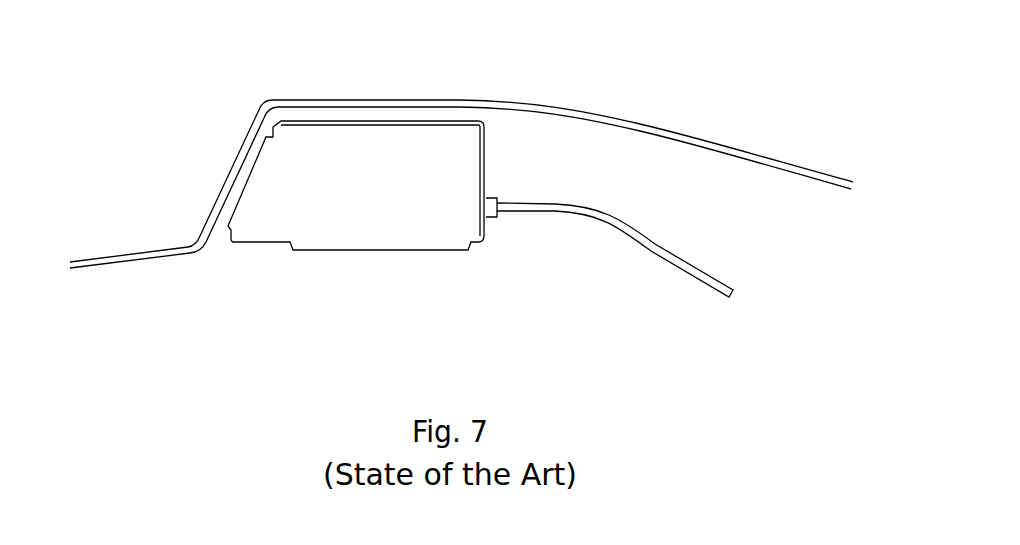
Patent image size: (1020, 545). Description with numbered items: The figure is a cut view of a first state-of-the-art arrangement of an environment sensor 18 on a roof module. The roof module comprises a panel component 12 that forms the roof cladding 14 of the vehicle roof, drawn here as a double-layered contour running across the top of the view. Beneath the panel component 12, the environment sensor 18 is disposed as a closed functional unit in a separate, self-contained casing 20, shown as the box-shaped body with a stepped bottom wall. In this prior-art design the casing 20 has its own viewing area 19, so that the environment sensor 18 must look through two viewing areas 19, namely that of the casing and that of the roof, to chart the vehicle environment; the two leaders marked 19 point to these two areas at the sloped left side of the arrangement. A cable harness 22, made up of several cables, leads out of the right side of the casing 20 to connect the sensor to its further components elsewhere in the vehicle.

The panel component 12 is at (415, 104).
The roof cladding 14 is at (507, 104).
The environment sensor 18 is at (437, 186).
The viewing area 19 is at (228, 168).
The casing 20 is at (377, 232).
The cable harness 22 is at (630, 228).